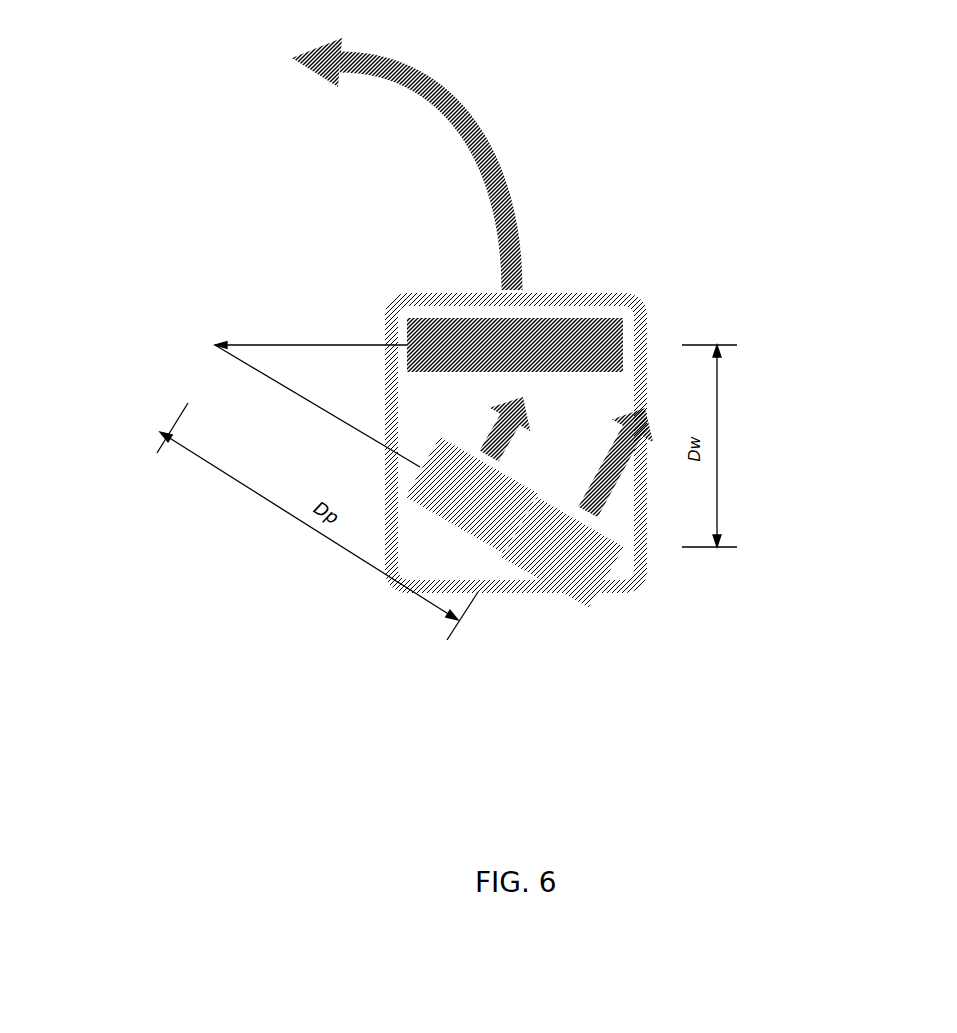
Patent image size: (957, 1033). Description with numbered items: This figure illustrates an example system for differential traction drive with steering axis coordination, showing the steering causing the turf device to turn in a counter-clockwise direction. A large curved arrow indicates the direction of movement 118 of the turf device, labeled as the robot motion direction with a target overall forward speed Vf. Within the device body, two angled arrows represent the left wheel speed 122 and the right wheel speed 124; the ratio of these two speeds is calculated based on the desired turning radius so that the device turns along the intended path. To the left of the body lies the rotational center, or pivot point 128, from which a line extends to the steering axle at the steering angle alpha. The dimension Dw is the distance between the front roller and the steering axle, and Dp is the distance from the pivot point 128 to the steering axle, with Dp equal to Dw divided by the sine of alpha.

The direction of movement 118 is at (436, 73).
The left wheel speed 122 is at (488, 396).
The right wheel speed 124 is at (645, 398).
The pivot point 128 is at (242, 389).